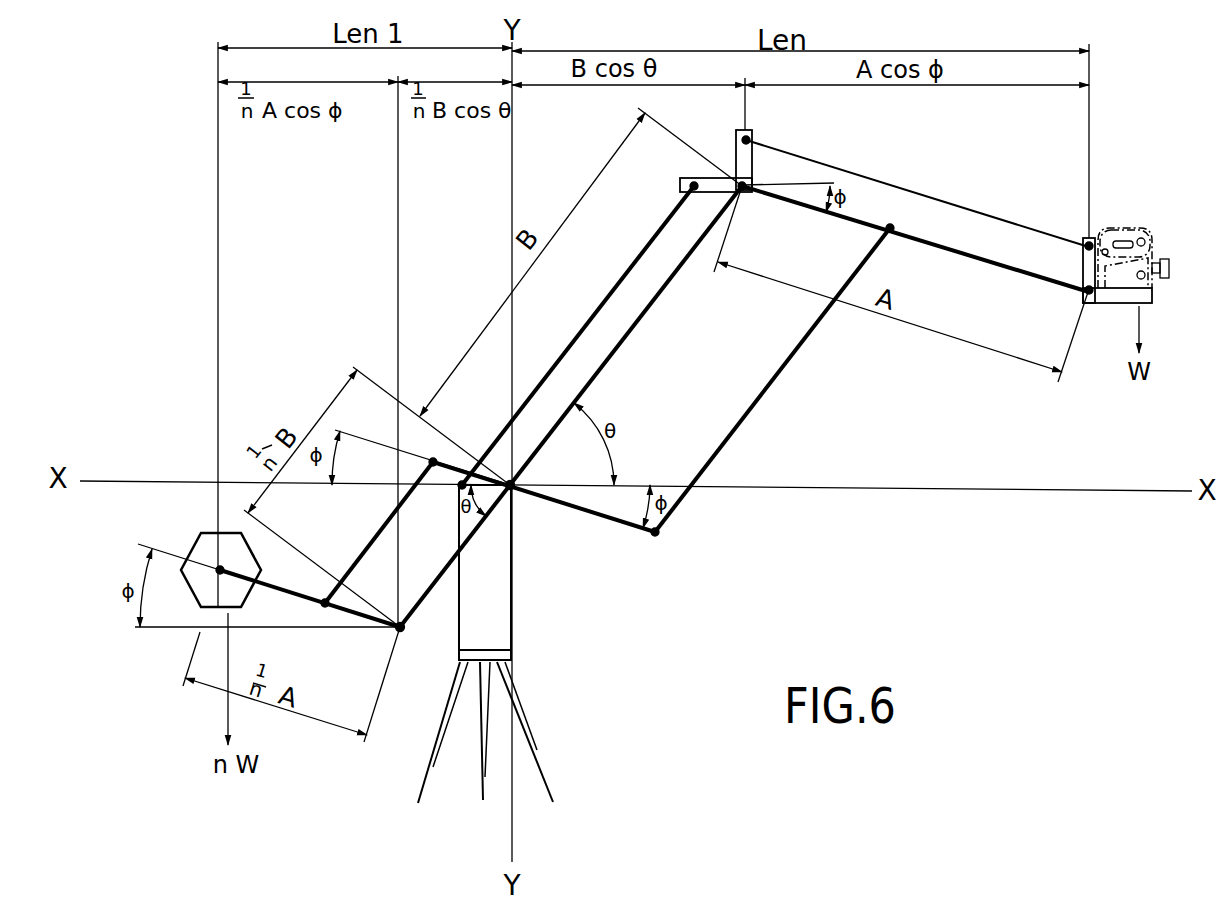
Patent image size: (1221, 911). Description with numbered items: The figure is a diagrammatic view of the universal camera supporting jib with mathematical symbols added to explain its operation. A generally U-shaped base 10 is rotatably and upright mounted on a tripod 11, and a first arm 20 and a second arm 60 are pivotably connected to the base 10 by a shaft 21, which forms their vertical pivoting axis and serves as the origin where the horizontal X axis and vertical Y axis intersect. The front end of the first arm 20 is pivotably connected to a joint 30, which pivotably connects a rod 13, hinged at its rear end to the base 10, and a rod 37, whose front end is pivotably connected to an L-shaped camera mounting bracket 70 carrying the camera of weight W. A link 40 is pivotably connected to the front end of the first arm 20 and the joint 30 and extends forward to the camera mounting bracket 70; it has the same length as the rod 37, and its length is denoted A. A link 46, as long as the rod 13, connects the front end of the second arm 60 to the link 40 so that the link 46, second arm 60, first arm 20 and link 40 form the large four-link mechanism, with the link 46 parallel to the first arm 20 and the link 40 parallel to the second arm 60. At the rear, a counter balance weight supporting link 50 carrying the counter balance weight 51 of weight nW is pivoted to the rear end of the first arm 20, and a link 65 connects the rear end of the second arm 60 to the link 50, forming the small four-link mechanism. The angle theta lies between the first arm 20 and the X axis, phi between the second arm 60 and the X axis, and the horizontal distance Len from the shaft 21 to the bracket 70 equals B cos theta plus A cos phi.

The U-shaped base 10 is at (514, 633).
The tripod 11 is at (535, 751).
The rod 13 is at (573, 337).
The first arm 20 is at (606, 355).
The shaft 21 is at (518, 484).
The joint 30 is at (750, 130).
The rod 37 is at (973, 208).
The link 40 is at (1014, 272).
The link 46 is at (752, 409).
The counter balance weight supporting link 50 is at (355, 623).
The counter balance weight 51 is at (220, 575).
The second arm 60 is at (614, 521).
The link 65 is at (390, 514).
The camera mounting bracket 70 is at (1092, 237).